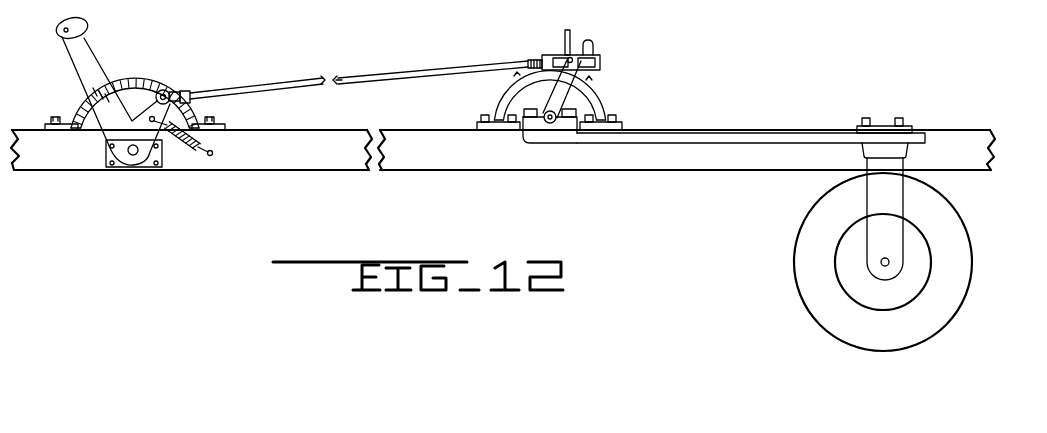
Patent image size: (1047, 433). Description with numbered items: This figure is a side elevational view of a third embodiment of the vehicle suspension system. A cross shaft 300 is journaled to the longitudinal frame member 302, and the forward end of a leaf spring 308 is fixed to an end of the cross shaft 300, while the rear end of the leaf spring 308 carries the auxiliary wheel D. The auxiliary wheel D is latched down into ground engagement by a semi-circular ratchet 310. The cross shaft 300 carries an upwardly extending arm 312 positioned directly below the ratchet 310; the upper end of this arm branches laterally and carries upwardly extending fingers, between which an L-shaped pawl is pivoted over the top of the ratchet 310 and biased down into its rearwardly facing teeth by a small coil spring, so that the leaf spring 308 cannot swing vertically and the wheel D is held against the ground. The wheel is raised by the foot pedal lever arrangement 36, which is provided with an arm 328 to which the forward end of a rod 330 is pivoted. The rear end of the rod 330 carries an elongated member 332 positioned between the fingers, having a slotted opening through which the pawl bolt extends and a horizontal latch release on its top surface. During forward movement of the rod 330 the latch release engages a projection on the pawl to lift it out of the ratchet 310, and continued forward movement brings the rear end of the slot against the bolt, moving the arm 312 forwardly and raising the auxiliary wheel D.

The foot pedal lever arrangement 36 is at (82, 53).
The arm 328 is at (148, 108).
The rod 330 is at (245, 88).
The longitudinal frame member 302 is at (295, 162).
The elongated member 332 is at (598, 54).
The arm 312 is at (560, 90).
The semi-circular ratchet 310 is at (600, 107).
The leaf spring 308 is at (703, 138).
The cross shaft 300 is at (550, 124).
The auxiliary wheel D is at (975, 288).